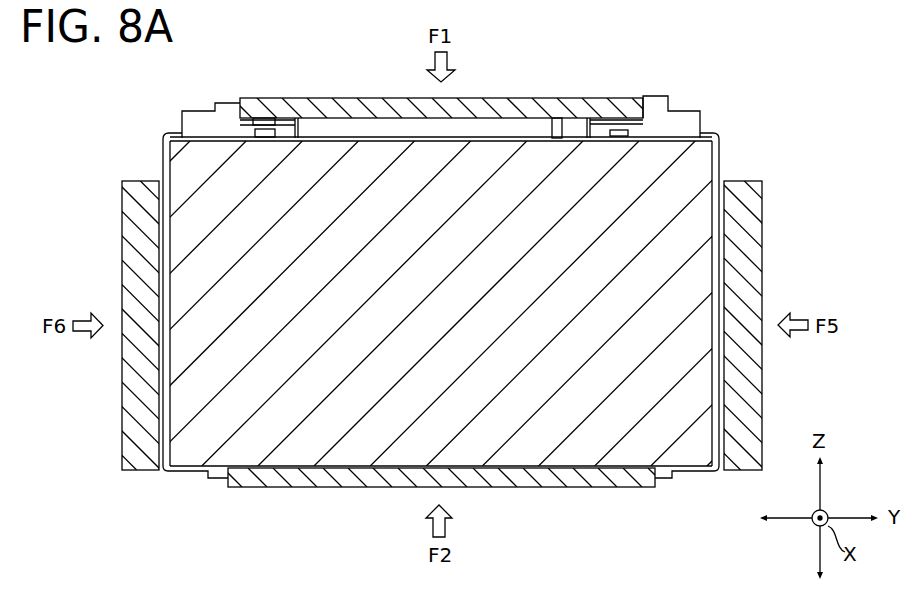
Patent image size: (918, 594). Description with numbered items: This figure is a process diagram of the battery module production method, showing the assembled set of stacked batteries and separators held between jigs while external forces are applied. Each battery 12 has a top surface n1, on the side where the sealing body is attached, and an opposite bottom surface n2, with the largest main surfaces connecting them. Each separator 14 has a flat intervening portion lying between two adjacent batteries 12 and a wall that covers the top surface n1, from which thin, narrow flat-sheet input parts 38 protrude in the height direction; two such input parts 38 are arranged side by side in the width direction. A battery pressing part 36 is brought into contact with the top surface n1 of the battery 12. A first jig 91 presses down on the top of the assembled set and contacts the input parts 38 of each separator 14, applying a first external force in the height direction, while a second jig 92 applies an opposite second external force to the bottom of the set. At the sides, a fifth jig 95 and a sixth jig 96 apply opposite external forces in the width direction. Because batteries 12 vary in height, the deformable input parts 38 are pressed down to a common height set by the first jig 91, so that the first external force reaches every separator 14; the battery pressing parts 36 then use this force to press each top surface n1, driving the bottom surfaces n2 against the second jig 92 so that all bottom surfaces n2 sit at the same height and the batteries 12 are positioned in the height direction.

The battery 12 is at (693, 168).
The separator 14 is at (703, 113).
The battery pressing part 36 is at (222, 143).
The input part 38 is at (265, 119).
The first jig 91 is at (577, 98).
The second jig 92 is at (565, 488).
The fifth jig 95 is at (763, 255).
The sixth jig 96 is at (122, 238).
The top surface n1 is at (486, 129).
The bottom surface n2 is at (622, 488).